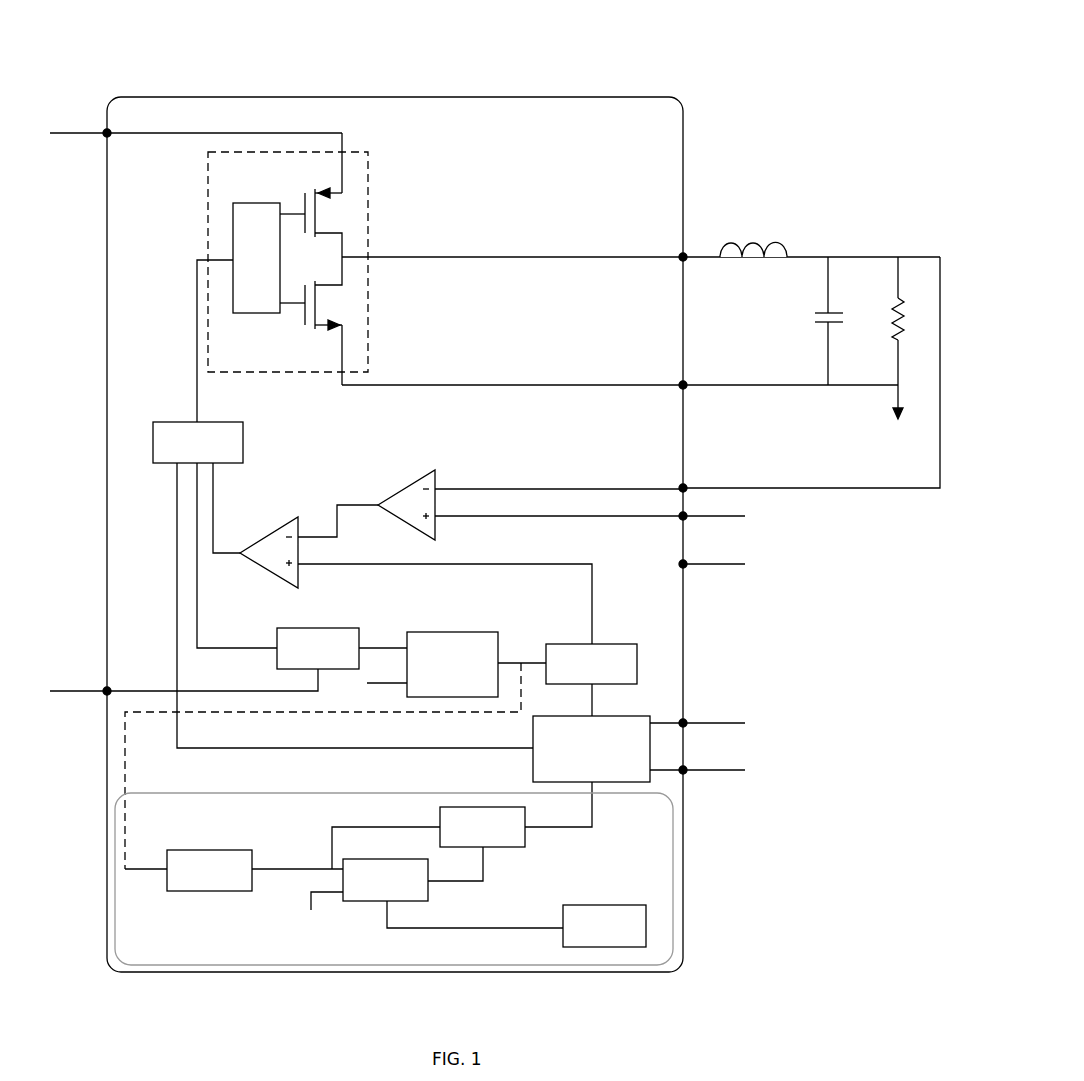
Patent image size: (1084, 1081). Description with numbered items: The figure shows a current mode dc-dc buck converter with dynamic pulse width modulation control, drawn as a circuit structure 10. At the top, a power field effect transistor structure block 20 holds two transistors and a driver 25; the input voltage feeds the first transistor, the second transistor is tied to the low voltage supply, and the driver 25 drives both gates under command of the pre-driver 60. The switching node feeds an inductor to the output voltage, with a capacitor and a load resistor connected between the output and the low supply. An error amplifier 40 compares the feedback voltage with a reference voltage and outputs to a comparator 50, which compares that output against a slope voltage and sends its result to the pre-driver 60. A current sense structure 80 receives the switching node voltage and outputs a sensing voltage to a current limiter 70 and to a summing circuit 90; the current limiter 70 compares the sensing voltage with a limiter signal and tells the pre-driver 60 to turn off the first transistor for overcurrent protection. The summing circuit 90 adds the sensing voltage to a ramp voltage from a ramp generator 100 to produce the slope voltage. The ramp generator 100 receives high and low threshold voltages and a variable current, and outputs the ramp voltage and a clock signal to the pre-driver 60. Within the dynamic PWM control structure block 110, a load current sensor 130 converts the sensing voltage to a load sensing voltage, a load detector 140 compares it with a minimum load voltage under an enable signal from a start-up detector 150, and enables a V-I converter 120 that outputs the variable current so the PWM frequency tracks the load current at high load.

The circuit structure 10 is at (188, 56).
The power field effect transistor structure block 20 is at (368, 168).
The driver 25 is at (233, 225).
The error amplifier 40 is at (435, 470).
The comparator 50 is at (298, 517).
The pre-driver 60 is at (243, 450).
The current limiter 70 is at (286, 628).
The current sense structure 80 is at (472, 632).
The summing circuit 90 is at (615, 644).
The ramp generator 100 is at (650, 716).
The dynamic PWM control structure block 110 is at (677, 818).
The voltage-current (V-I) converter 120 is at (455, 807).
The load current sensor 130 is at (205, 850).
The load detector 140 is at (352, 861).
The start-up detector 150 is at (597, 905).